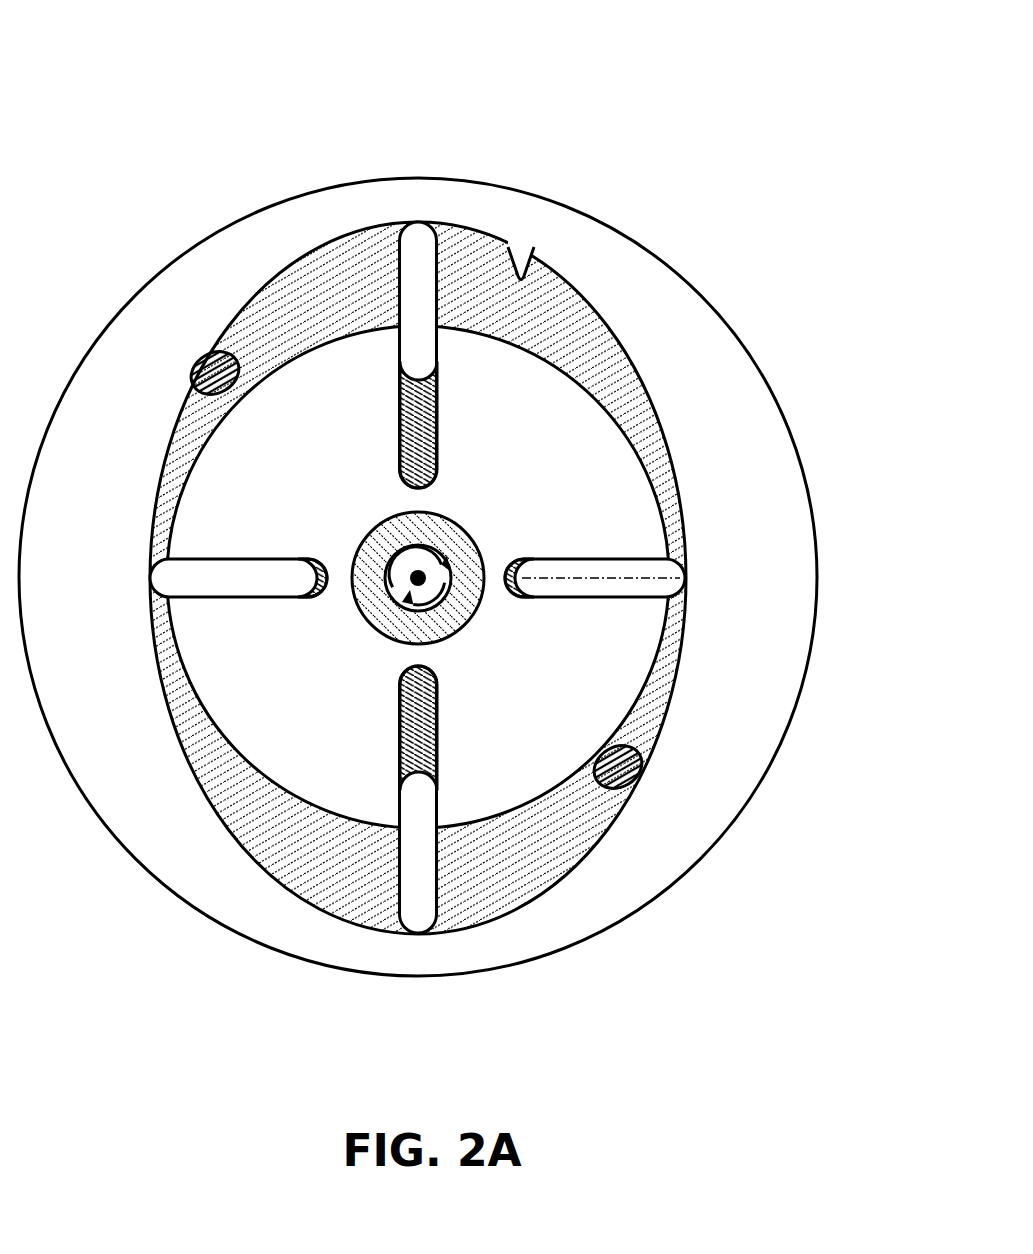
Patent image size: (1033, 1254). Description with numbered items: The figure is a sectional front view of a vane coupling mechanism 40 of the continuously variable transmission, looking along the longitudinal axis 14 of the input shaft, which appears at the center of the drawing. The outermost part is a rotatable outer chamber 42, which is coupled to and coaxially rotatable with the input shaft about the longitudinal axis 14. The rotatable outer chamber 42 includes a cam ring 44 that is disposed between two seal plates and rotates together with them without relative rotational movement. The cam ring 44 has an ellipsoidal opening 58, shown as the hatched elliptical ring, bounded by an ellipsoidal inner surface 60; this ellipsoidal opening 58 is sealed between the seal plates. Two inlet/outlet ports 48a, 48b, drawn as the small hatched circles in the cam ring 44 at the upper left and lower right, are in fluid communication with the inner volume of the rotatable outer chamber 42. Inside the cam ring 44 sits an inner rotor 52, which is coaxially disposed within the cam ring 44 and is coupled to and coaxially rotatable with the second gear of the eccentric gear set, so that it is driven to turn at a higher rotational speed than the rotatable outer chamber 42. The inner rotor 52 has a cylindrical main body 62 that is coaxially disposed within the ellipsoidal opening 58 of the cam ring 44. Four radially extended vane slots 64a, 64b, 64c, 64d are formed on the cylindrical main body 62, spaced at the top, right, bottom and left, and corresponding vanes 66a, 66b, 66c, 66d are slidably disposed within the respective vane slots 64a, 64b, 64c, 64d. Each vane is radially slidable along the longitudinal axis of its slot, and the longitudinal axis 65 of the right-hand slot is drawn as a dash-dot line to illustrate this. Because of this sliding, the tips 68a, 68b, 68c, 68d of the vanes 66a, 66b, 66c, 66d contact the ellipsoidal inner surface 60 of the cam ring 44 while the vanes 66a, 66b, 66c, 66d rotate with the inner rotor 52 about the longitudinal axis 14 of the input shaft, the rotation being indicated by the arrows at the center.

The vane coupling mechanism 40 is at (115, 32).
The longitudinal axis 14 is at (418, 578).
The rotatable outer chamber 42 is at (474, 170).
The cam ring 44 is at (353, 180).
The inlet/outlet port 48a is at (622, 790).
The inlet/outlet port 48b is at (217, 352).
The inner rotor 52 is at (652, 467).
The ellipsoidal opening 58 is at (603, 315).
The ellipsoidal inner surface 60 is at (524, 277).
The cylindrical main body 62 is at (603, 400).
The vane slot 64a is at (437, 456).
The vane slot 64b is at (515, 597).
The vane slot 64c is at (437, 732).
The vane slot 64d is at (317, 597).
The longitudinal axis of vane slot 65 is at (605, 576).
The vane 66a is at (399, 280).
The vane 66b is at (630, 597).
The vane 66c is at (400, 878).
The vane 66d is at (225, 597).
The vane tip 68a is at (417, 222).
The vane tip 68b is at (685, 577).
The vane tip 68c is at (418, 933).
The vane tip 68d is at (150, 578).